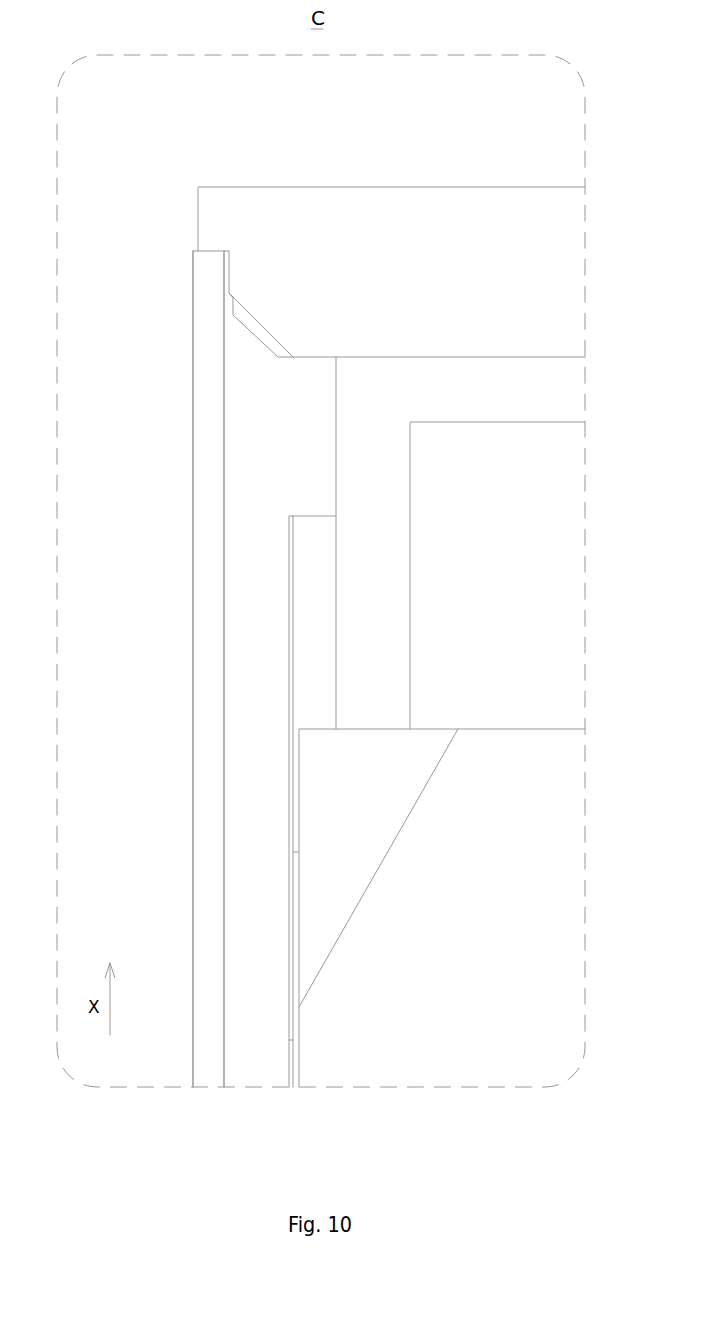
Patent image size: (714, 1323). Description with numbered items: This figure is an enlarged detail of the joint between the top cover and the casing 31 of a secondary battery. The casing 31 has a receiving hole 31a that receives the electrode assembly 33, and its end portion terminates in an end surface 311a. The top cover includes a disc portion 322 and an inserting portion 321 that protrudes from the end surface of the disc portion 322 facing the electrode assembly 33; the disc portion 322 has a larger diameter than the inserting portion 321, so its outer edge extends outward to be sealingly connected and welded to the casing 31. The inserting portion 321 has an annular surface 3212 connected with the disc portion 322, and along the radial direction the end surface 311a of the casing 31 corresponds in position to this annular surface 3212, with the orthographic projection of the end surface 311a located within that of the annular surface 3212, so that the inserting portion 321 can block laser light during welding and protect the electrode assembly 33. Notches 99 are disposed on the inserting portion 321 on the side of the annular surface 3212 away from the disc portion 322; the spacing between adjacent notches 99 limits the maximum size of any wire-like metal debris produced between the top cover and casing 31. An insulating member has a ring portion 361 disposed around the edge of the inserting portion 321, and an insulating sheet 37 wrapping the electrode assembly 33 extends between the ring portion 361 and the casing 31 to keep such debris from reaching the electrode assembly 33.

The casing 31 is at (205, 480).
The receiving hole 31a is at (261, 1017).
The end surface 311a is at (207, 252).
The disc portion 322 is at (208, 211).
The inserting portion 321 is at (315, 325).
The annular surface 3212 is at (229, 272).
The notches 99 is at (257, 330).
The insulating sheet 37 is at (292, 568).
The ring portion 361 is at (380, 571).
The electrode assembly 33 is at (352, 790).